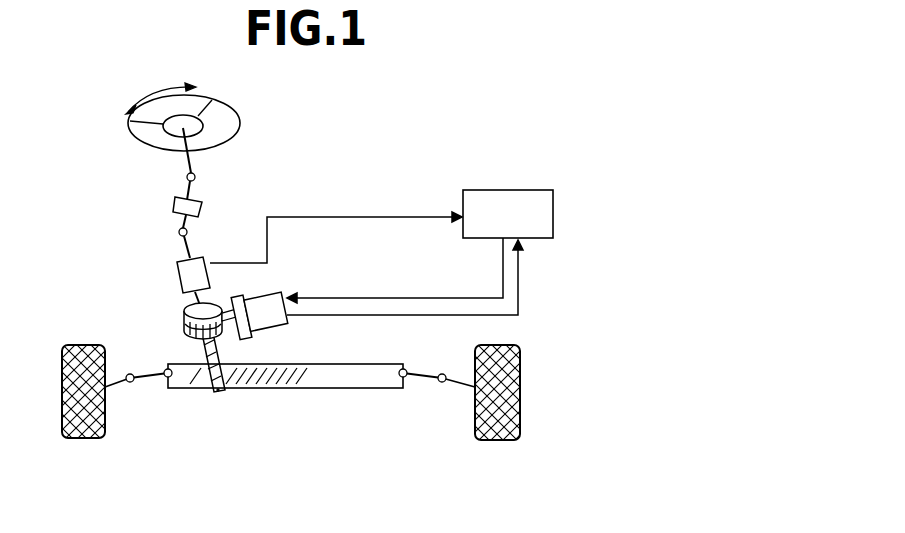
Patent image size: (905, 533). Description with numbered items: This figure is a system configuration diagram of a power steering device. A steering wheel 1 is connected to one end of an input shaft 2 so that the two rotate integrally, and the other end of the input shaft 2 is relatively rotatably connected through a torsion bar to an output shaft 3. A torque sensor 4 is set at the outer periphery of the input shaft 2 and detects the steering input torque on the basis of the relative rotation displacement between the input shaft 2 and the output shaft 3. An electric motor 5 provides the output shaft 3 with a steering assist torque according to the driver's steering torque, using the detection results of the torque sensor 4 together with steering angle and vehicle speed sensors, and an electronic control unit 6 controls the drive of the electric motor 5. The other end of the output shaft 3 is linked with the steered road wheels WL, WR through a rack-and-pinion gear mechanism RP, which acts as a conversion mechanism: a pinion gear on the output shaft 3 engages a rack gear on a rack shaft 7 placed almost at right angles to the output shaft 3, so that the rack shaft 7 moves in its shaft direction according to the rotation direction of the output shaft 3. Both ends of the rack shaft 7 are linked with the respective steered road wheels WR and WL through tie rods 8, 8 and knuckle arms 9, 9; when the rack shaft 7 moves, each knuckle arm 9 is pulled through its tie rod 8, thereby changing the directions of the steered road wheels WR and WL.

The steering wheel 1 is at (128, 128).
The input shaft 2 is at (180, 247).
The output shaft 3 is at (200, 348).
The torque sensor 4 is at (177, 282).
The electric motor 5 is at (263, 302).
The electronic control unit 6 is at (510, 188).
The rack shaft 7 is at (365, 378).
The tie rod 8 is at (148, 381).
The knuckle arm 9 is at (117, 388).
The steered road wheel WR is at (82, 437).
The steered road wheel WL is at (492, 434).
The rack-and-pinion gear mechanism RP is at (204, 408).